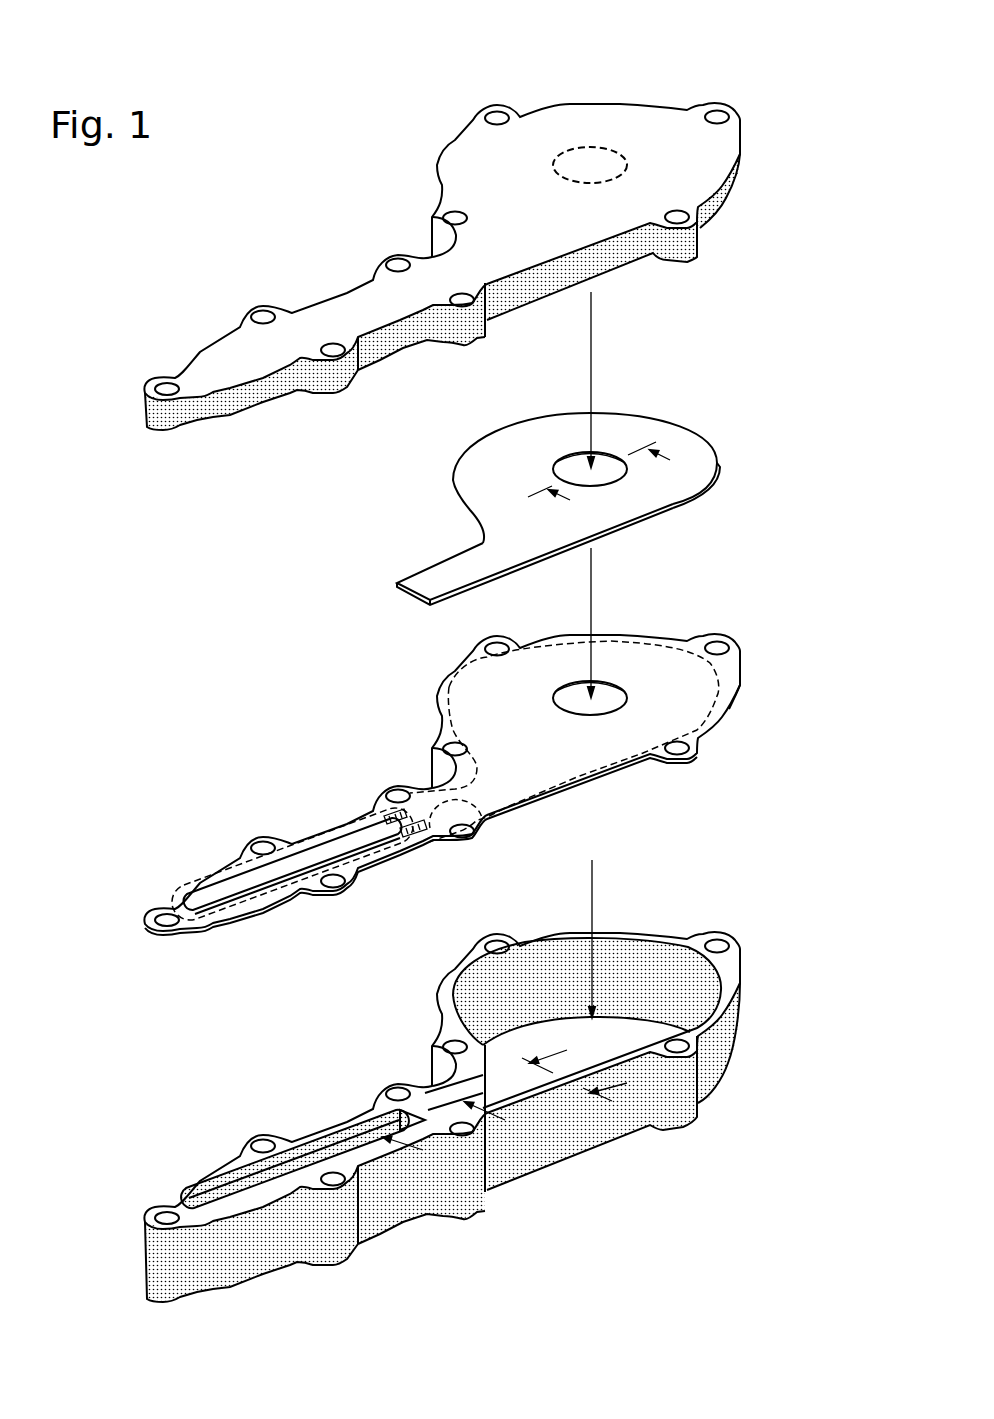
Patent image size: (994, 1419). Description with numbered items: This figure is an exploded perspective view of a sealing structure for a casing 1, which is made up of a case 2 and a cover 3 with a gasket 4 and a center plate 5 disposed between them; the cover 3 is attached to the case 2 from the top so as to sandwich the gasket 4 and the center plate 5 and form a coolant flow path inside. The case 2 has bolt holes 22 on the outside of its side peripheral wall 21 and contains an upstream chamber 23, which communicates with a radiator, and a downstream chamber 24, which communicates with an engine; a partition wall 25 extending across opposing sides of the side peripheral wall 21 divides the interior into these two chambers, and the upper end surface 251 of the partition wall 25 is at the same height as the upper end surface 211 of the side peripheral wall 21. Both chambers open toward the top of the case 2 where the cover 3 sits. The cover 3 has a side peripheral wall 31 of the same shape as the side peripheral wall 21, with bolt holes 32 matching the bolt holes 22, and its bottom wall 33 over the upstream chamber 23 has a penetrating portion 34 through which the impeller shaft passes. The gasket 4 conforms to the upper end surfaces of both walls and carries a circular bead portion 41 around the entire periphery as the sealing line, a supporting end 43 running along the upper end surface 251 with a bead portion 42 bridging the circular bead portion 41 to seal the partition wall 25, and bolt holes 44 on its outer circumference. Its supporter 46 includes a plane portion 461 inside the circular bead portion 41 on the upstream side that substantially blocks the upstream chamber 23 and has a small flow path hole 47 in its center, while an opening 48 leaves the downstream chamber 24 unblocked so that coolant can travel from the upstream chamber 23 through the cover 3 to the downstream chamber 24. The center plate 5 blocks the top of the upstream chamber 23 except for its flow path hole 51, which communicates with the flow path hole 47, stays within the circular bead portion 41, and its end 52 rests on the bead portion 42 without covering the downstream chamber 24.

The casing 1 is at (162, 194).
The case 2 is at (572, 1243).
The side peripheral wall 21 is at (263, 1260).
The upper end surface 211 is at (727, 990).
The bolt holes 22 is at (150, 1216).
The upstream chamber 23 is at (643, 977).
The downstream chamber 24 is at (220, 1183).
The partition wall 25 is at (380, 1107).
The upper end surface 251 is at (427, 1097).
The cover 3 is at (735, 78).
The side peripheral wall 31 is at (602, 260).
The bolt holes 32 is at (158, 384).
The bottom wall 33 is at (670, 140).
The penetrating portion 34 is at (590, 160).
The gasket 4 is at (735, 597).
The circular bead portion 41 is at (733, 692).
The bead portion 42 is at (490, 828).
The supporting end 43 is at (418, 812).
The bolt holes 44 is at (153, 913).
The supporter 46 is at (445, 756).
The plane portion 461 is at (548, 668).
The flow path hole 47 is at (600, 690).
The opening 48 is at (330, 845).
The center plate 5 is at (735, 392).
The flow path hole 51 is at (595, 462).
The end 52 is at (407, 593).